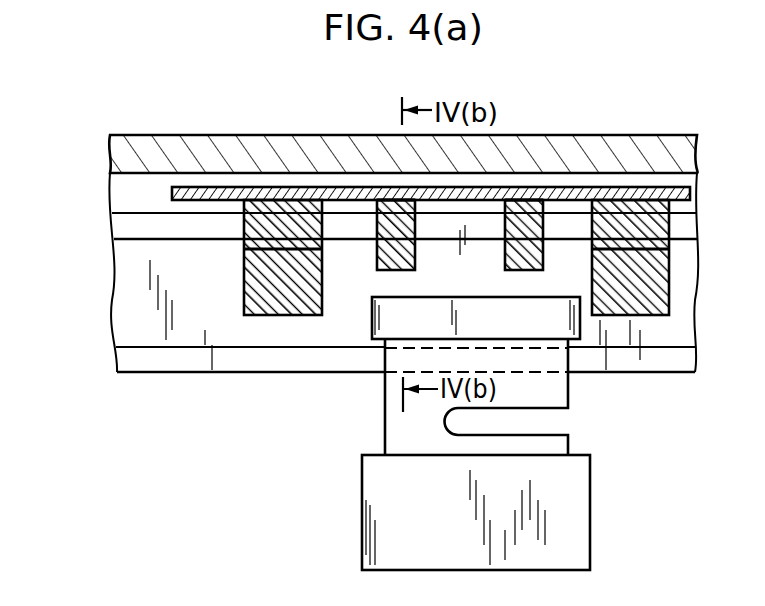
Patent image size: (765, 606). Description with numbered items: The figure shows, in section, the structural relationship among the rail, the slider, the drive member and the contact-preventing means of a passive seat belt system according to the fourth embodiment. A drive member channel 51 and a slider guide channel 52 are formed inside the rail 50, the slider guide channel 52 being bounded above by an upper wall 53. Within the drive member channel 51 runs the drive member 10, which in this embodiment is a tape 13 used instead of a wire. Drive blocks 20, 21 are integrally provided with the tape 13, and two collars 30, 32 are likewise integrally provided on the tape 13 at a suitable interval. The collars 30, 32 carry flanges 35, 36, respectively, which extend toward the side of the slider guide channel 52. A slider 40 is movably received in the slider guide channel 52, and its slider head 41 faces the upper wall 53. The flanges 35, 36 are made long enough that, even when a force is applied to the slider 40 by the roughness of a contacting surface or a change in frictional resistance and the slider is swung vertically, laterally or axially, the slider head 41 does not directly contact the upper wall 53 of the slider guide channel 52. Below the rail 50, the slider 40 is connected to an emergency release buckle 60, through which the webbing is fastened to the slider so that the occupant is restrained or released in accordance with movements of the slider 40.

The drive member 10 is at (563, 172).
The tape 13 is at (214, 187).
The drive block 20 is at (244, 314).
The drive block 21 is at (657, 316).
The collar 30 is at (386, 198).
The collar 32 is at (517, 198).
The flange 35 is at (378, 268).
The flange 36 is at (542, 266).
The slider 40 is at (568, 396).
The slider head 41 is at (373, 330).
The rail 50 is at (160, 352).
The drive member channel 51 is at (120, 192).
The slider guide channel 52 is at (135, 310).
The upper wall 53 is at (138, 240).
The emergency release buckle 60 is at (590, 507).